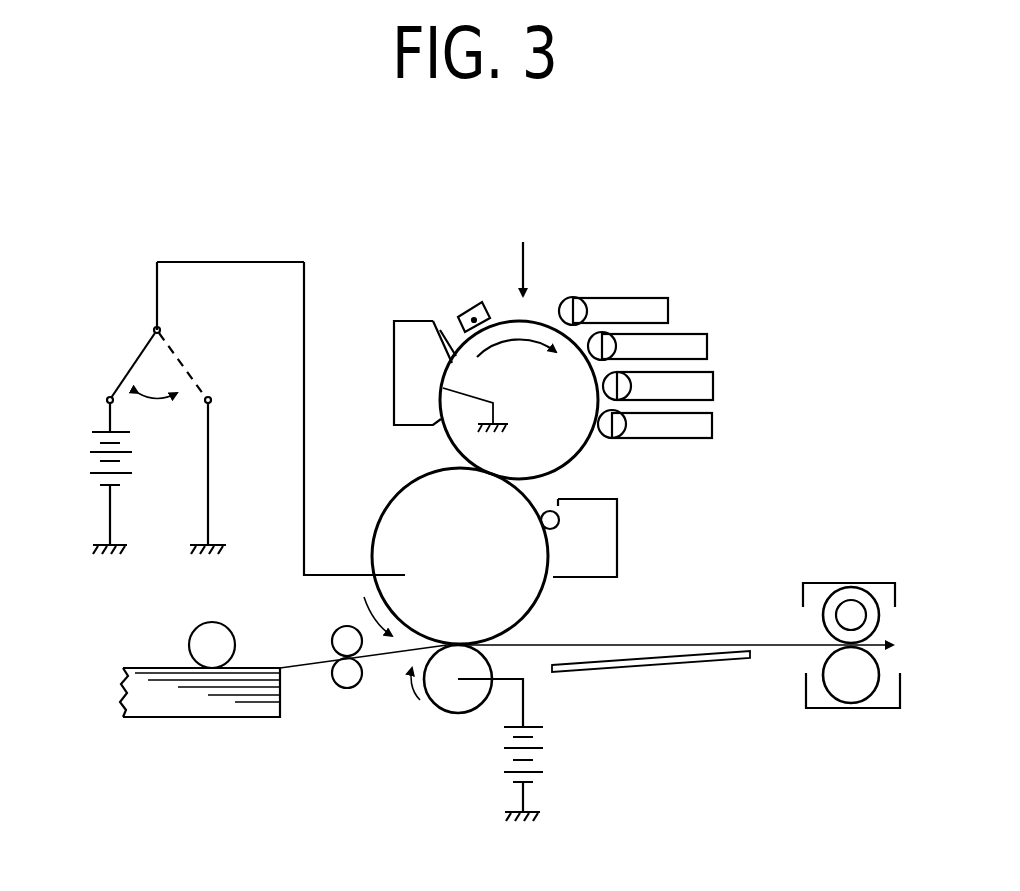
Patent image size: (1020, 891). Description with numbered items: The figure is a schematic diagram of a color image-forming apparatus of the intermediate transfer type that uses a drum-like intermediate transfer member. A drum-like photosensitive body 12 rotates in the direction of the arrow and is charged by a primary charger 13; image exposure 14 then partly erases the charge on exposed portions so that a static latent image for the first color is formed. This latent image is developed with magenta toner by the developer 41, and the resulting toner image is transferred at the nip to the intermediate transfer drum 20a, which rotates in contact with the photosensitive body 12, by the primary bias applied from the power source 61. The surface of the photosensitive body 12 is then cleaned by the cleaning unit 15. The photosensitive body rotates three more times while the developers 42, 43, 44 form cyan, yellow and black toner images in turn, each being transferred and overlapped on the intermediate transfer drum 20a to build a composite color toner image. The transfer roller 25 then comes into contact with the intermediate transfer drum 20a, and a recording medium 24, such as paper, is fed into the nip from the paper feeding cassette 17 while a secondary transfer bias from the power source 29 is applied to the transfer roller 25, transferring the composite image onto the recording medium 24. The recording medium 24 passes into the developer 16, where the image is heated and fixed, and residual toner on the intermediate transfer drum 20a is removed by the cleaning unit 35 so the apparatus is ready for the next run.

The photosensitive body 12 is at (577, 460).
The primary charger 13 is at (470, 303).
The image exposure 14 is at (527, 262).
The cleaning unit 15 is at (412, 340).
The developer 16 is at (852, 583).
The paper feeding cassette 17 is at (222, 718).
The intermediate transfer drum 20a is at (406, 512).
The recording medium 24 is at (150, 675).
The transfer roller 25 is at (447, 714).
The power source 29 is at (553, 748).
The cleaning unit 35 is at (605, 548).
The developer 41 is at (668, 312).
The developer 42 is at (695, 345).
The developer 43 is at (705, 386).
The developer 44 is at (705, 426).
The power source 61 is at (125, 460).